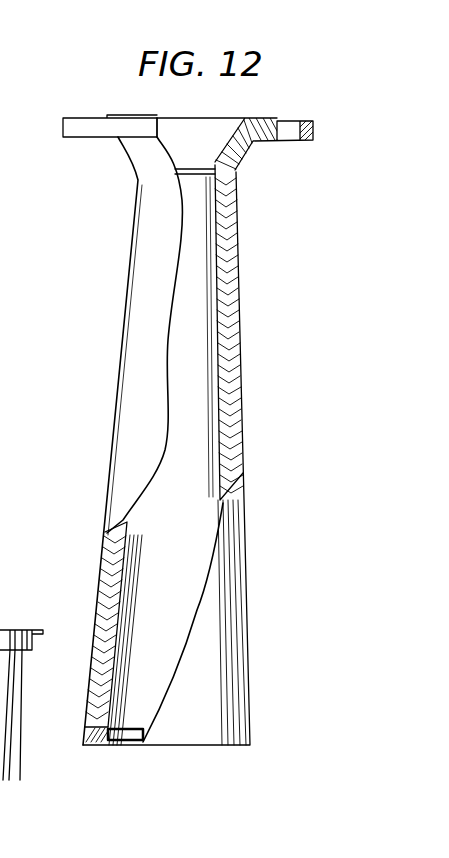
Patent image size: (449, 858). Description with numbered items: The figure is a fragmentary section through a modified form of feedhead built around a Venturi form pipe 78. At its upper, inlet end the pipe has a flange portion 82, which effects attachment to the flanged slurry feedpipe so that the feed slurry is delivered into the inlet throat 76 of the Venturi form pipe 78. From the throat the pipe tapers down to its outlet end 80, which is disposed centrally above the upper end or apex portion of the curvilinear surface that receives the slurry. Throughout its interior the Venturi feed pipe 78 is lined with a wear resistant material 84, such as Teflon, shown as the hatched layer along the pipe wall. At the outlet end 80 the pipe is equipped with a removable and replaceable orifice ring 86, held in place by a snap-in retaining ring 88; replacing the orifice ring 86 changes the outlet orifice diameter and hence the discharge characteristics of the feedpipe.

The inlet throat 76 is at (213, 163).
The Venturi form pipe 78 is at (98, 393).
The outlet end 80 is at (247, 727).
The flange portion 82 is at (63, 127).
The wear resistant material 84 is at (208, 439).
The orifice ring 86 is at (137, 733).
The snap-in retaining ring 88 is at (97, 745).